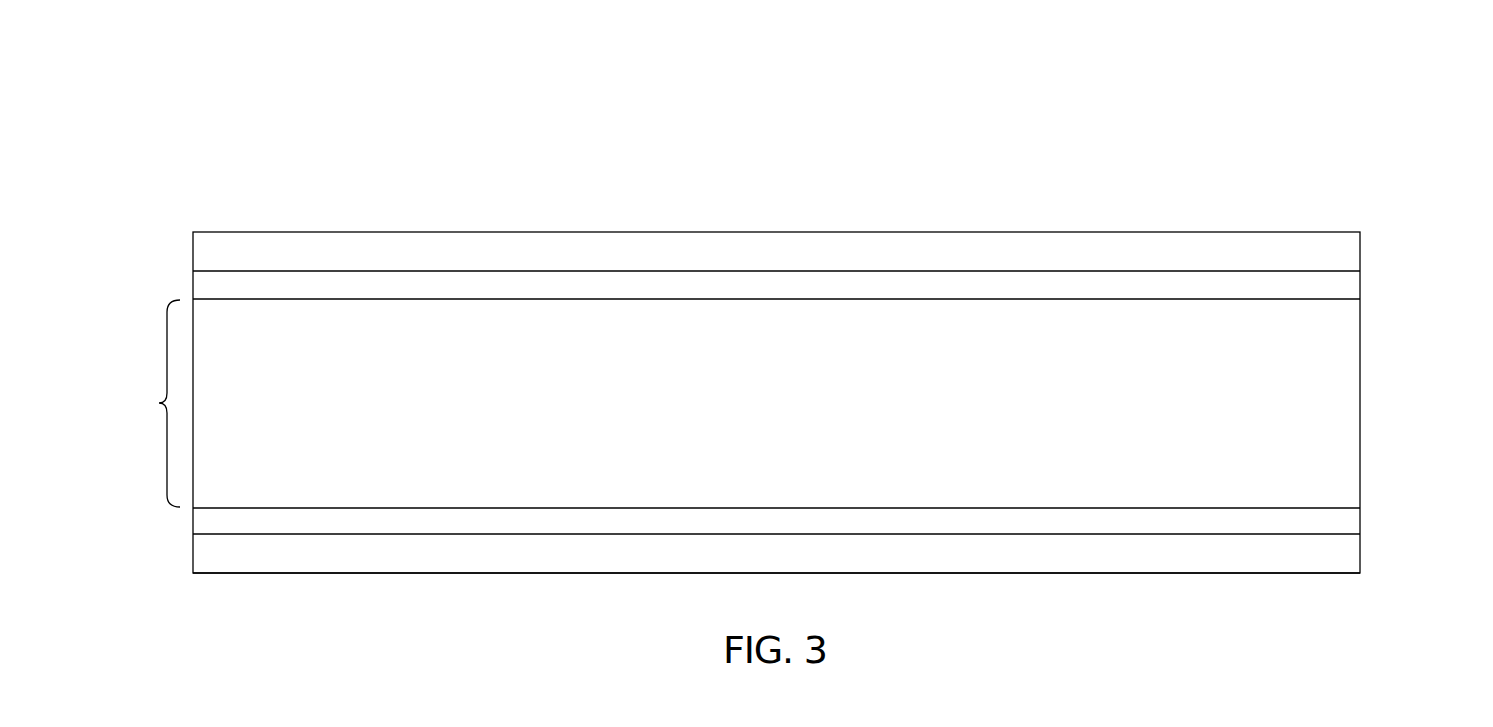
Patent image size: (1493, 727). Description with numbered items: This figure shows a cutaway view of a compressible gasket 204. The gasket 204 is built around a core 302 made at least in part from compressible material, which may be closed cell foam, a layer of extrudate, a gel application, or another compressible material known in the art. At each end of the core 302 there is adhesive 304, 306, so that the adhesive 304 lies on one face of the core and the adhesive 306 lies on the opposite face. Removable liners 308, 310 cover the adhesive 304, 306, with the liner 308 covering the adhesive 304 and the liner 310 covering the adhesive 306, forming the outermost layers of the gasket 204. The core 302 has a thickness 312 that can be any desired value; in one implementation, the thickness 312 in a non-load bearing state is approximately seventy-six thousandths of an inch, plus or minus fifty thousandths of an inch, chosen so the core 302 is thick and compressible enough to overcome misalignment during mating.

The gasket 204 is at (802, 157).
The core 302 is at (1353, 395).
The adhesive 304 is at (1353, 520).
The adhesive 306 is at (1353, 284).
The removable liner 308 is at (193, 553).
The removable liner 310 is at (193, 256).
The thickness 312 is at (141, 403).